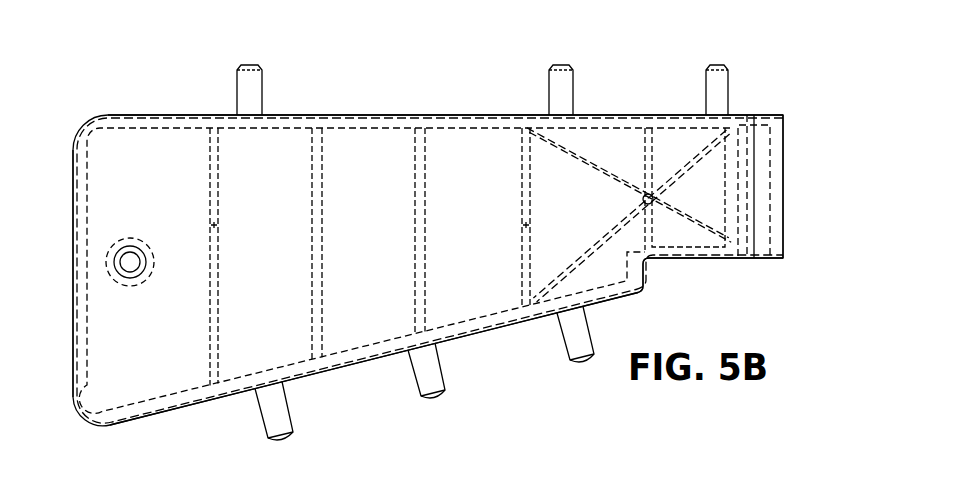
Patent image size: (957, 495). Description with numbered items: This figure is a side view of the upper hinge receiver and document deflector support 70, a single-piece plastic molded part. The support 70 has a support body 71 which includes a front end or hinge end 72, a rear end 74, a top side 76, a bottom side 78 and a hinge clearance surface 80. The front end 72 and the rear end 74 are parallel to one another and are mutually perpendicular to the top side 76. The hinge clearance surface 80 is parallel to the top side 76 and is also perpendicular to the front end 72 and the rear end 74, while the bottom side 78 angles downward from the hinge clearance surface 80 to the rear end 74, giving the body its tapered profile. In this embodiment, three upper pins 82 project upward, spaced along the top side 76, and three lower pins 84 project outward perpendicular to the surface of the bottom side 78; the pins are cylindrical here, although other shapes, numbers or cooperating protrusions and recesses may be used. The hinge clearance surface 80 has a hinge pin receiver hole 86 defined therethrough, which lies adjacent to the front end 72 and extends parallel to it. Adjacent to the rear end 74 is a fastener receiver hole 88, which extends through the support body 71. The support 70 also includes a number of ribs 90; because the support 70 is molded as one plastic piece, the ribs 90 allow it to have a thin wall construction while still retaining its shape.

The upper hinge receiver and document deflector support 70 is at (126, 47).
The support body 71 is at (112, 156).
The front end 72 is at (786, 187).
The rear end 74 is at (70, 303).
The top side 76 is at (143, 113).
The bottom side 78 is at (171, 422).
The hinge clearance surface 80 is at (712, 260).
The upper pins 82 is at (258, 92).
The lower pins 84 is at (272, 426).
The hinge pin receiver hole 86 is at (771, 225).
The fastener receiver hole 88 is at (118, 248).
The ribs 90 is at (212, 185).